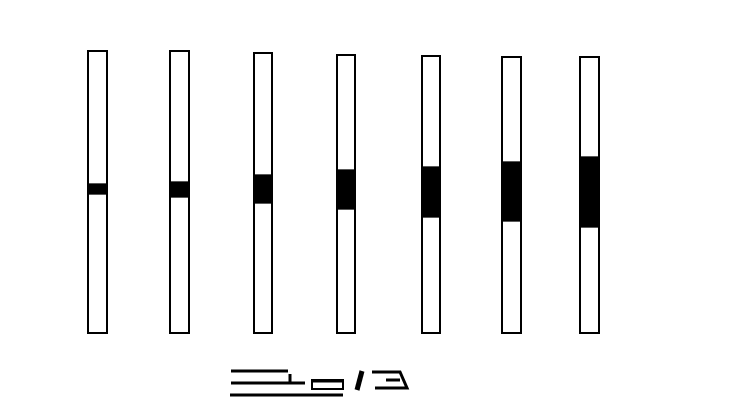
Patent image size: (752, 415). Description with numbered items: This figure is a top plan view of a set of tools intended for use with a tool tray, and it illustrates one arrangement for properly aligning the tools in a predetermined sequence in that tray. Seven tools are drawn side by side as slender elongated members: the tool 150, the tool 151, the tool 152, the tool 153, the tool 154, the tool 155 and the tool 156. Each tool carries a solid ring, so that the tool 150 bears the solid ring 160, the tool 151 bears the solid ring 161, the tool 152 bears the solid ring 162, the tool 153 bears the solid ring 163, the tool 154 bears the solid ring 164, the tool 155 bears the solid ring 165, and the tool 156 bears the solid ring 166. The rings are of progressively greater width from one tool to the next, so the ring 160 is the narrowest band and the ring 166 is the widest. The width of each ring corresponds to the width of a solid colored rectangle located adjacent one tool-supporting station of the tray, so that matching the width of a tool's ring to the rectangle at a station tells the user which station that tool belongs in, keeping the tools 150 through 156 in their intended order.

The tool 150 is at (107, 51).
The tool 151 is at (189, 51).
The tool 152 is at (272, 53).
The tool 153 is at (355, 55).
The tool 154 is at (440, 56).
The tool 155 is at (521, 57).
The tool 156 is at (599, 57).
The solid ring 160 is at (88, 188).
The solid ring 161 is at (171, 184).
The solid ring 162 is at (254, 183).
The solid ring 163 is at (337, 183).
The solid ring 164 is at (422, 183).
The solid ring 165 is at (502, 183).
The solid ring 166 is at (580, 183).